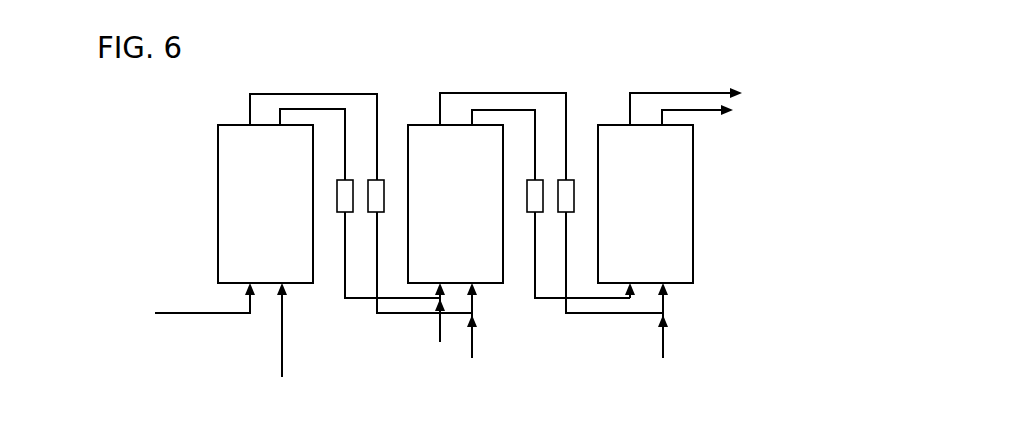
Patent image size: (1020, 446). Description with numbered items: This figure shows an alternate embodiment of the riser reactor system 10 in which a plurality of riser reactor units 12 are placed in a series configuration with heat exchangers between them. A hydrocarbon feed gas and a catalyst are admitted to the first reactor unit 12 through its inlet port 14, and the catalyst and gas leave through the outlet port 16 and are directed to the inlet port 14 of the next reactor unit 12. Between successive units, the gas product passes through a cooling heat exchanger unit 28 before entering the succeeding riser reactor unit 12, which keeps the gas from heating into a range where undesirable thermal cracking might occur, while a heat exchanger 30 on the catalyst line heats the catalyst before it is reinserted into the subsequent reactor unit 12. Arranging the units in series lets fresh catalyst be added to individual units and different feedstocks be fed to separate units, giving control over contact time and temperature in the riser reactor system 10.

The riser reactor system 10 is at (762, 170).
The riser reactor unit 12 is at (661, 215).
The inlet port 14 is at (469, 286).
The outlet port 16 is at (280, 125).
The cooling heat exchanger unit 28 is at (583, 222).
The heat exchanger 30 is at (552, 222).